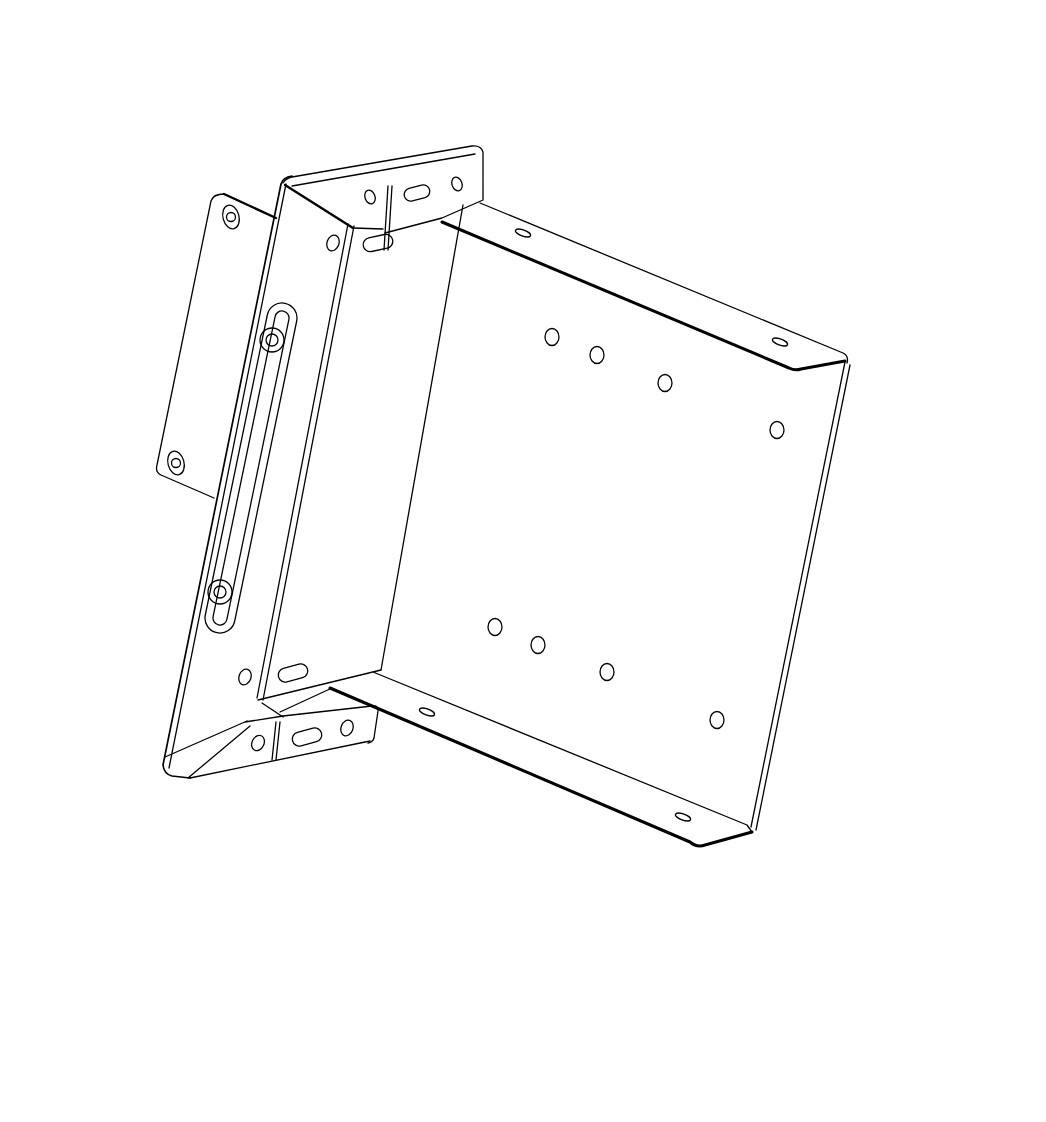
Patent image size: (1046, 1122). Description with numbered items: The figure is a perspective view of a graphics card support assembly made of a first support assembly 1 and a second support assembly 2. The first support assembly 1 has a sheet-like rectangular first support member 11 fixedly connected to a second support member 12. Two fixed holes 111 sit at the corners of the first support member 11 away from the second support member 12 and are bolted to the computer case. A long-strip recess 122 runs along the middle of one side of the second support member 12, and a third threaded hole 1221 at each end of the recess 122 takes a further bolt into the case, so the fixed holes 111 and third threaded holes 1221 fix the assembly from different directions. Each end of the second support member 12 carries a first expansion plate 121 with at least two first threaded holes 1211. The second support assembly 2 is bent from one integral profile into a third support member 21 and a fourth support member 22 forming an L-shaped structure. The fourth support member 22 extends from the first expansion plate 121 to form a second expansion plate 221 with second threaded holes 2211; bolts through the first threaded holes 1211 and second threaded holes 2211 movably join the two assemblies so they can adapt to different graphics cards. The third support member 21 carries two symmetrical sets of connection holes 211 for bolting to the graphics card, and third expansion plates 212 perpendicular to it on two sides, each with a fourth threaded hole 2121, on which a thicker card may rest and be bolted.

The first support assembly 1 is at (343, 70).
The first support member 11 is at (243, 222).
The fixed hole 111 is at (224, 219).
The second support member 12 is at (317, 250).
The first expansion plate 121 is at (233, 758).
The first threaded hole 1211 is at (372, 182).
The recess 122 is at (256, 380).
The third threaded hole 1221 is at (210, 591).
The second support assembly 2 is at (623, 57).
The third support member 21 is at (587, 320).
The connection hole 211 is at (499, 619).
The third expansion plate 212 is at (700, 826).
The fourth threaded hole 2121 is at (782, 246).
The fourth support member 22 is at (400, 303).
The second expansion plate 221 is at (268, 770).
The second threaded hole 2211 is at (317, 746).